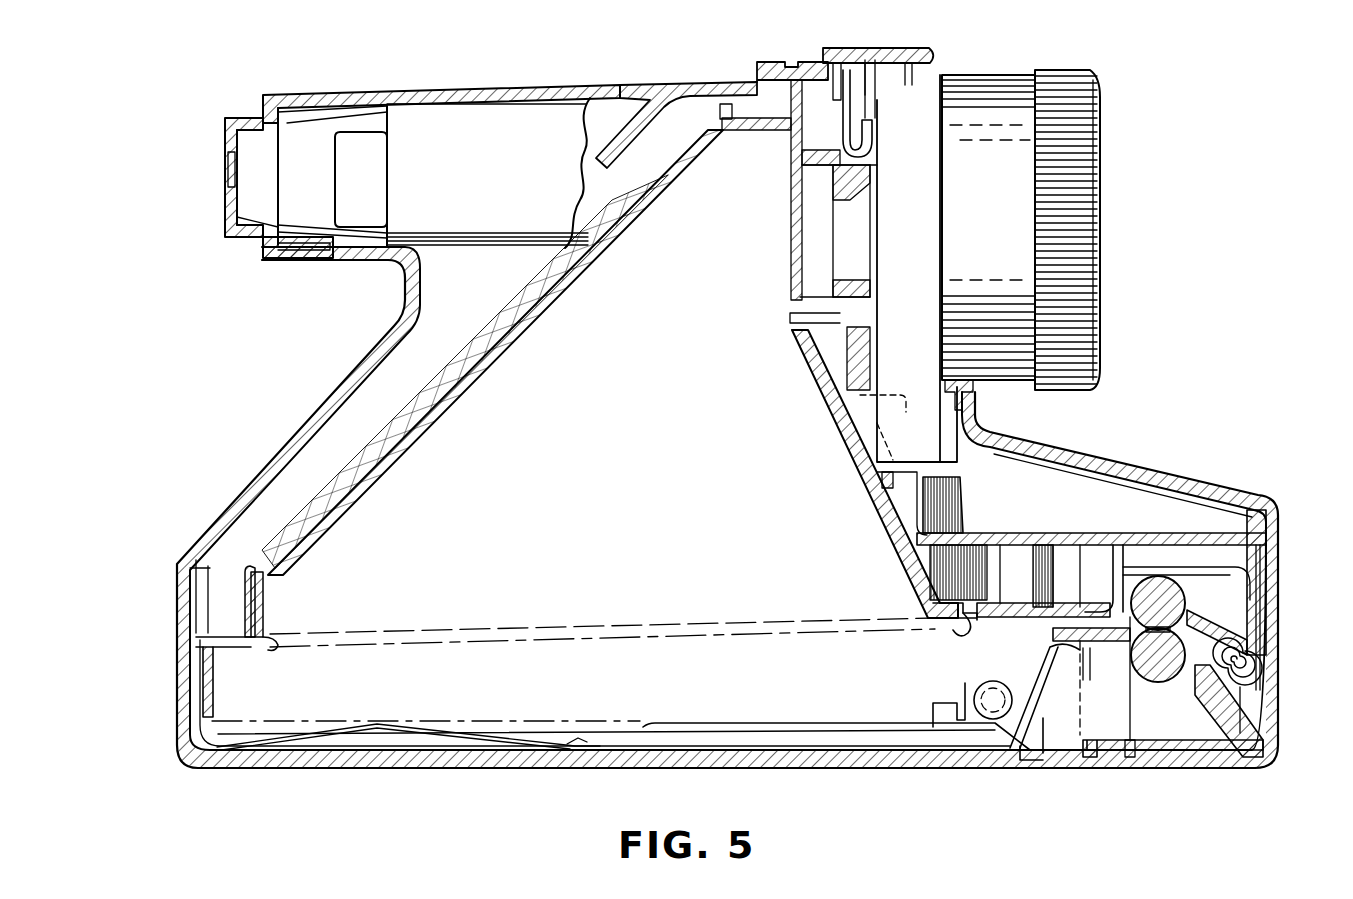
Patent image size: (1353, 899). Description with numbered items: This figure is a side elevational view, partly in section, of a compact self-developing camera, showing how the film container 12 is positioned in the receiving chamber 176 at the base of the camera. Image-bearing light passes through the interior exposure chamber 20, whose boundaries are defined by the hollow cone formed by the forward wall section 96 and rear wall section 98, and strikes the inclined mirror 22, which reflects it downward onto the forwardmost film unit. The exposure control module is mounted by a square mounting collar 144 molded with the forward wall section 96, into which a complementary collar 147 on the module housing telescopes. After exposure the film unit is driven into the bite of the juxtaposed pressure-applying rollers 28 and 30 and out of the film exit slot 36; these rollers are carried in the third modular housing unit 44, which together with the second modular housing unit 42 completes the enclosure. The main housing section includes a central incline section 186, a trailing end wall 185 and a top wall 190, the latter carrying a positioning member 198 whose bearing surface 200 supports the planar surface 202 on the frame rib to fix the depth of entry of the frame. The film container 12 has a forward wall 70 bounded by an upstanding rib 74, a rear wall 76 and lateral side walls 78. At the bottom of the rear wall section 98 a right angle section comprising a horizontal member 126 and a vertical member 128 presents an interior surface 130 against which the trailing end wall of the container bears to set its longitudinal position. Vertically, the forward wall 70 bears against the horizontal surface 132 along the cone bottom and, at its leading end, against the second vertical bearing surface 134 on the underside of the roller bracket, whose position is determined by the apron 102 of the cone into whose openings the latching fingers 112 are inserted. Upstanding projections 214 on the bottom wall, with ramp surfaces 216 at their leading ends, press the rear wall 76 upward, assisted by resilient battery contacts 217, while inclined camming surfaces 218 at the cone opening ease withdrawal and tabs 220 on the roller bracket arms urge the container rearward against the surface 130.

The film container 12 is at (528, 708).
The exposure chamber 20 is at (490, 434).
The inclined mirror 22 is at (632, 235).
The pressure-applying roller 28 is at (1180, 588).
The pressure-applying roller 30 is at (1163, 681).
The film exit slot 36 is at (1267, 697).
The second modular housing unit 42 is at (1138, 463).
The third modular housing unit 44 is at (1276, 768).
The forward wall 70 is at (590, 632).
The upstanding rib 74 is at (748, 622).
The rear wall 76 is at (657, 724).
The lateral side wall 78 is at (750, 705).
The forward wall section 96 is at (837, 437).
The rear wall section 98 is at (540, 300).
The apron 102 is at (1015, 598).
The latching finger 112 is at (963, 577).
The horizontal member 126 is at (218, 632).
The vertical member 128 is at (207, 683).
The interior surface 130 is at (213, 684).
The horizontal surface 132 is at (963, 634).
The second vertical bearing surface 134 is at (996, 618).
The mounting collar 144 is at (848, 149).
The complementary collar 147 is at (851, 282).
The receiving chamber 176 is at (282, 722).
The trailing end wall 185 is at (177, 603).
The central incline section 186 is at (326, 405).
The top wall 190 is at (730, 78).
The positioning member 198 is at (737, 103).
The bearing surface 200 is at (767, 72).
The planar surface 202 is at (803, 95).
The upstanding projection 214 is at (818, 726).
The ramp surface 216 is at (1021, 738).
The resilient battery contact 217 is at (353, 733).
The inclined camming surface 218 is at (940, 633).
The tab 220 is at (1085, 644).